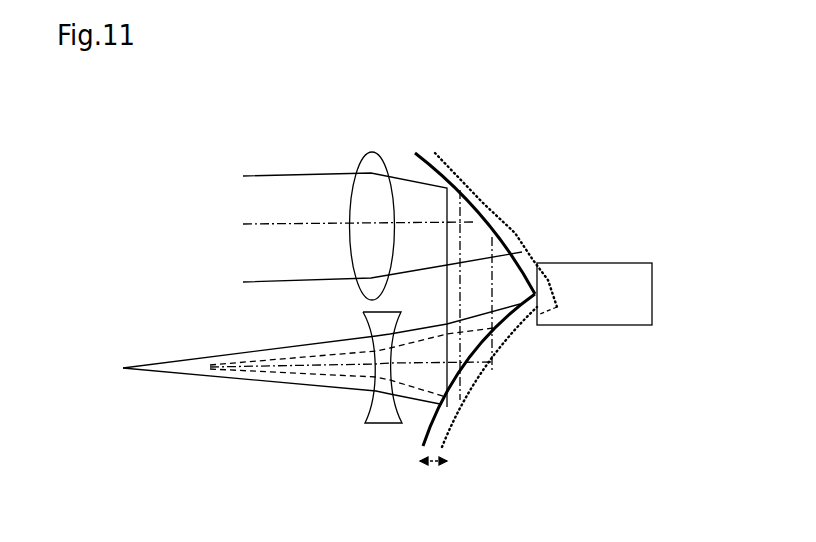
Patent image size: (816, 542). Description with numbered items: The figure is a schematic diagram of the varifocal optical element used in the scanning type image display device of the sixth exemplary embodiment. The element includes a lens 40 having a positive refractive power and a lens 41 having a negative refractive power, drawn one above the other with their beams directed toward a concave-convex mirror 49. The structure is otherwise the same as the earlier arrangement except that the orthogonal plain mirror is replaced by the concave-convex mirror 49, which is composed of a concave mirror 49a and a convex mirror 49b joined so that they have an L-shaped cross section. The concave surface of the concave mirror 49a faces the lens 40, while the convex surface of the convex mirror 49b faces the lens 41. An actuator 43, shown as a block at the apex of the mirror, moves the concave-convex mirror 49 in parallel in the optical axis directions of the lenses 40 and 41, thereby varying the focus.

The lens 40 is at (371, 152).
The lens 41 is at (367, 423).
The actuator 43 is at (603, 263).
The concave-convex mirror 49 is at (520, 208).
The concave mirror 49a is at (485, 193).
The convex mirror 49b is at (508, 345).